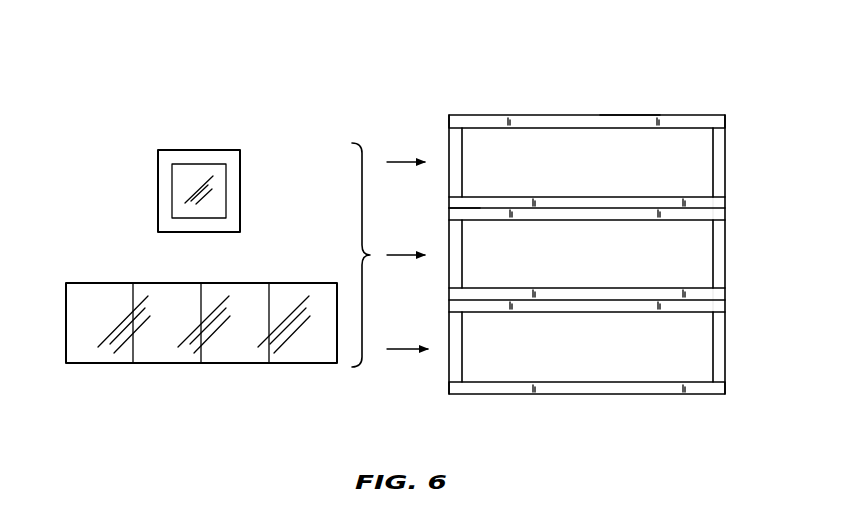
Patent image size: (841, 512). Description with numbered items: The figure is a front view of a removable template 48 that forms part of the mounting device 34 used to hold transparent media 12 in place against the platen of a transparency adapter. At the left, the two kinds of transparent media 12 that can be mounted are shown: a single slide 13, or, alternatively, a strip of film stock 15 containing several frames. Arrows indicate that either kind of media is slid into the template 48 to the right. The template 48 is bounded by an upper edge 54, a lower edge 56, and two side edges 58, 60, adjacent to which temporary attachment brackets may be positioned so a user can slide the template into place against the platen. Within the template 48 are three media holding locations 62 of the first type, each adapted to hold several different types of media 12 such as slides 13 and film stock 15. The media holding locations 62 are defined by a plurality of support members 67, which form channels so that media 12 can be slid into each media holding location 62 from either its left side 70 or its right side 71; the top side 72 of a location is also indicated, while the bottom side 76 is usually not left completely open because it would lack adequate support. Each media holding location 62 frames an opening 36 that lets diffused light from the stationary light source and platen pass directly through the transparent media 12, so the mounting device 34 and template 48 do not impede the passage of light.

The transparent media 12 is at (100, 178).
The slide 13 is at (200, 150).
The film stock 15 is at (238, 365).
The mounting device 34 is at (712, 68).
The removable template 48 is at (598, 242).
The openings 36 is at (681, 148).
The upper edge 54 is at (579, 115).
The lower edge 56 is at (588, 396).
The side edge 58 is at (449, 292).
The side edge 60 is at (725, 199).
The media holding location 62 is at (740, 165).
The support members 67 is at (545, 198).
The left side 70 is at (447, 140).
The right side 71 is at (725, 143).
The top side 72 is at (633, 112).
The bottom side 76 is at (478, 212).